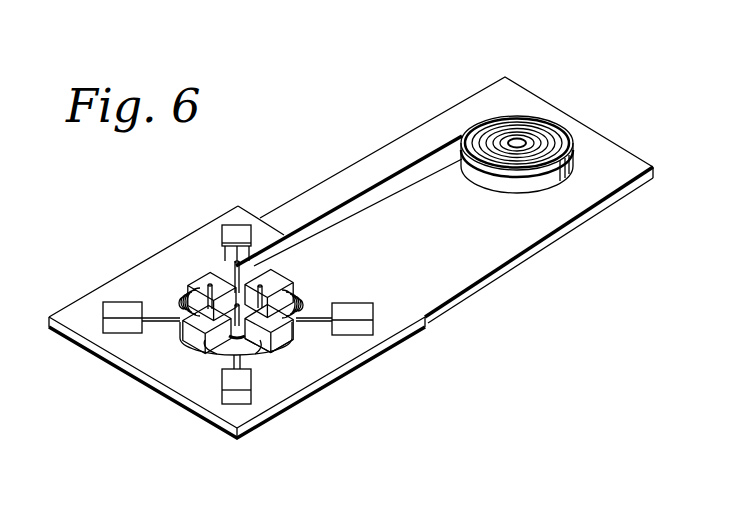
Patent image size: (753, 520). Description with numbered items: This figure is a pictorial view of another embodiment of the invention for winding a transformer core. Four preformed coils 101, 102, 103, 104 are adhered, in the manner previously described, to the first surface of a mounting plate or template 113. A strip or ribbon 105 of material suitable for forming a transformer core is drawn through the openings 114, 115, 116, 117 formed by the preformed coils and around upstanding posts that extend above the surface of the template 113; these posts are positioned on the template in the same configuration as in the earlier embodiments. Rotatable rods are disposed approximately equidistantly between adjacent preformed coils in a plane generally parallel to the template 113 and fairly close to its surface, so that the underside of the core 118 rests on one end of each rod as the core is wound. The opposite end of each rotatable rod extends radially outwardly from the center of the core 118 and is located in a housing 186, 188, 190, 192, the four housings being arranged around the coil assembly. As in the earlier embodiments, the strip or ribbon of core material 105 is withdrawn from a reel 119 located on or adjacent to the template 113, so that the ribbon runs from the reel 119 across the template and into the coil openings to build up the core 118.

The preformed coil 101 is at (188, 293).
The preformed coil 102 is at (197, 347).
The preformed coil 103 is at (277, 343).
The preformed coil 104 is at (280, 282).
The strip or ribbon of core material 105 is at (347, 205).
The mounting plate or template 113 is at (420, 336).
The opening 114 is at (185, 295).
The opening 115 is at (198, 388).
The opening 116 is at (258, 348).
The opening 117 is at (302, 292).
The core 118 is at (185, 330).
The reel 119 is at (500, 184).
The housing 186 is at (117, 300).
The housing 188 is at (242, 385).
The housing 190 is at (358, 308).
The housing 192 is at (231, 228).